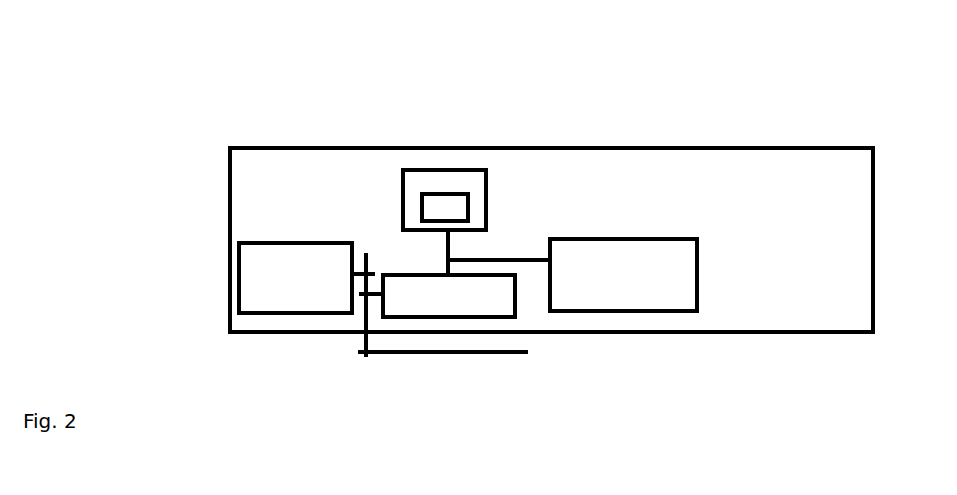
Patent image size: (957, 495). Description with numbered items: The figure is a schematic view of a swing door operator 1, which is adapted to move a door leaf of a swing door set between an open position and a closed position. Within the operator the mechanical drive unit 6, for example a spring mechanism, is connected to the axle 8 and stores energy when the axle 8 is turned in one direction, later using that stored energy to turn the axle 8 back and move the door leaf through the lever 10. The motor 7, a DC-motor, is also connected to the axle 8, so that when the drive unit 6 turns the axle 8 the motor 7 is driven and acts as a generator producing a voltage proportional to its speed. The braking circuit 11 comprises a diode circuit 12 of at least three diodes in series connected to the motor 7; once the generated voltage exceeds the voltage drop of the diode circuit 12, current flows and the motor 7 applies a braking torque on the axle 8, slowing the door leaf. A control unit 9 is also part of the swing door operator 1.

The swing door operator 1 is at (205, 253).
The drive unit 6 is at (263, 290).
The motor 7 is at (453, 295).
The axle 8 is at (359, 318).
The control unit 9 is at (581, 229).
The lever 10 is at (398, 369).
The braking circuit 11 is at (497, 215).
The diode circuit 12 is at (438, 193).